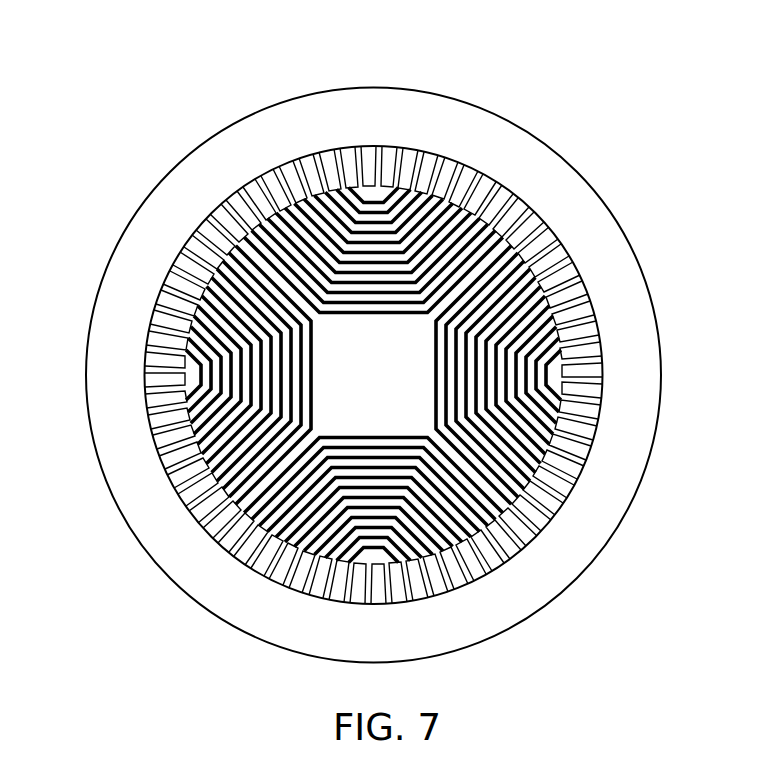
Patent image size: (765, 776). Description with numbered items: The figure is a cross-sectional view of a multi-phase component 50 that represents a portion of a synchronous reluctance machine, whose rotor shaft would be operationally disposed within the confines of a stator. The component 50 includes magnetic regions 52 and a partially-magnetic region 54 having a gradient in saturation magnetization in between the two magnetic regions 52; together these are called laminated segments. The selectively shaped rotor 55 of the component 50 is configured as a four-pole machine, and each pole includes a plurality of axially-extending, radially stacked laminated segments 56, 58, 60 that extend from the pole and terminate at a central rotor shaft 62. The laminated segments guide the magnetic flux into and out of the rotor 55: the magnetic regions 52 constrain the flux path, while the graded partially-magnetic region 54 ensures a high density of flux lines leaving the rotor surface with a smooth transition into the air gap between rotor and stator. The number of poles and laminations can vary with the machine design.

The component 50 is at (643, 72).
The magnetic region 52 is at (552, 397).
The partially-magnetic region 54 is at (510, 507).
The rotor 55 is at (515, 261).
The laminated segment 56 is at (186, 418).
The laminated segment 58 is at (190, 432).
The laminated segment 60 is at (196, 456).
The central rotor shaft 62 is at (386, 387).